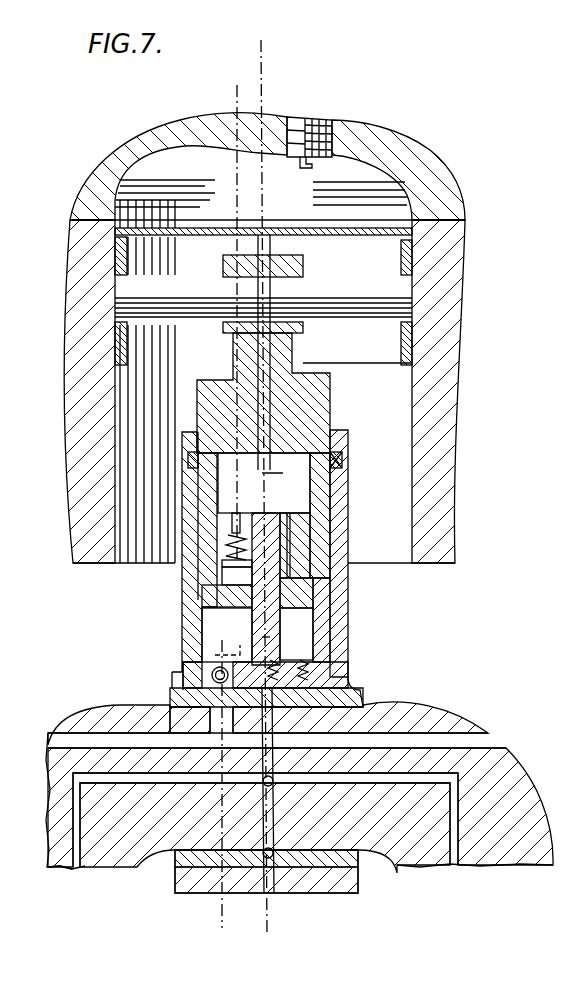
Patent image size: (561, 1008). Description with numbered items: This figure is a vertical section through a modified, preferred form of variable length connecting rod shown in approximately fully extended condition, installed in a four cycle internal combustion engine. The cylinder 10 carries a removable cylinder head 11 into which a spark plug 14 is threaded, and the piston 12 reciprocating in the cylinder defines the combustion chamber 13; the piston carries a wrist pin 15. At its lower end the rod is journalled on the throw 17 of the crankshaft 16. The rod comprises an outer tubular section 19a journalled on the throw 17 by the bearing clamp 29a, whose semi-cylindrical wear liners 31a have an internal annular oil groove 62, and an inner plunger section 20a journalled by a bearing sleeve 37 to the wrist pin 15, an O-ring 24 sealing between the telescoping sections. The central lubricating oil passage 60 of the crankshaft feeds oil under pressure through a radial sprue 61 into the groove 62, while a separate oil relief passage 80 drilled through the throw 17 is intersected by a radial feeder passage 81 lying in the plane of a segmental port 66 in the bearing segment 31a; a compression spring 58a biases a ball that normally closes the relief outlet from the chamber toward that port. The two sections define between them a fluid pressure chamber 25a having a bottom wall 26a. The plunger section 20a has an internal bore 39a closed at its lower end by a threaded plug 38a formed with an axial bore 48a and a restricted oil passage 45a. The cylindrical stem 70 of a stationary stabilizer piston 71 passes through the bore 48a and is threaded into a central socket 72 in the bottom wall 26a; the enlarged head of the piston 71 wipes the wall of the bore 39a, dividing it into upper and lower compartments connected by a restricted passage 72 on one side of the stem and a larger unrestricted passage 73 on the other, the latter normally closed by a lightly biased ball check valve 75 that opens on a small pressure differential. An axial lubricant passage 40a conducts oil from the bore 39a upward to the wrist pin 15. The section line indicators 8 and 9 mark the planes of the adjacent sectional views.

The section line 8- 8 is at (262, 55).
The section line 9- 9 is at (250, 98).
The cylinder 10 is at (85, 447).
The cylinder head 11 is at (140, 143).
The piston 12 is at (193, 222).
The combustion chamber 13 is at (300, 210).
The spark plug 14 is at (303, 120).
The wrist pin 15 is at (343, 317).
The crankshaft 16 is at (62, 875).
The throw 17 is at (165, 832).
The outer tubular section 19a is at (347, 510).
The inner plunger section 20a is at (330, 415).
The O-ring 24 is at (342, 458).
The fluid pressure chamber 25a is at (303, 620).
The bottom wall 26a is at (213, 668).
The clamp segment 29a is at (358, 884).
The bearing segments 31a is at (332, 698).
The bearing sleeve 37 is at (223, 323).
The screw threaded plug 38a is at (223, 587).
The internal chamber or bore 39a is at (230, 475).
The axial lubricant passage 40a is at (292, 373).
The restricted oil passage 45a is at (313, 587).
The axial bore 48a is at (227, 635).
The compression spring 58a is at (180, 690).
The lubricating oil passage 60 is at (80, 790).
The radial feeder branch or sprue 61 is at (273, 784).
The annular oil groove 62 is at (283, 895).
The segmental arcuate port 66 is at (217, 698).
The stem portion 70 is at (270, 637).
The stationary stabilizer piston 71 is at (298, 552).
The restricted oil passage 72 is at (310, 537).
The unrestricted passage 73 is at (237, 523).
The ball check valve 75 is at (223, 543).
The oil relief or exhaust passage 80 is at (455, 738).
The radial feeder passage 81 is at (220, 705).